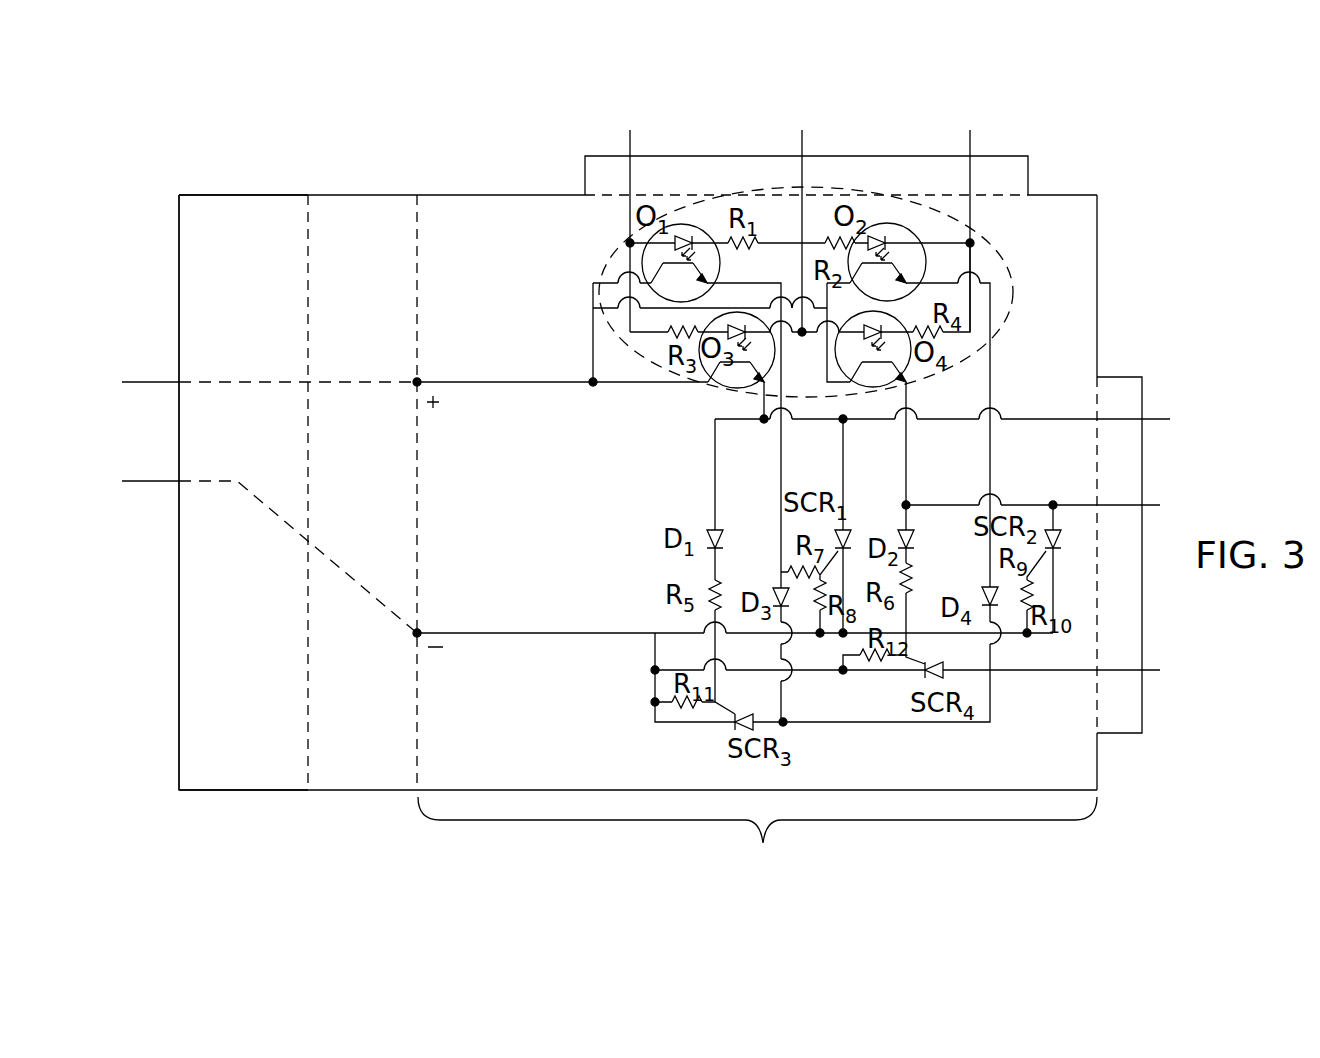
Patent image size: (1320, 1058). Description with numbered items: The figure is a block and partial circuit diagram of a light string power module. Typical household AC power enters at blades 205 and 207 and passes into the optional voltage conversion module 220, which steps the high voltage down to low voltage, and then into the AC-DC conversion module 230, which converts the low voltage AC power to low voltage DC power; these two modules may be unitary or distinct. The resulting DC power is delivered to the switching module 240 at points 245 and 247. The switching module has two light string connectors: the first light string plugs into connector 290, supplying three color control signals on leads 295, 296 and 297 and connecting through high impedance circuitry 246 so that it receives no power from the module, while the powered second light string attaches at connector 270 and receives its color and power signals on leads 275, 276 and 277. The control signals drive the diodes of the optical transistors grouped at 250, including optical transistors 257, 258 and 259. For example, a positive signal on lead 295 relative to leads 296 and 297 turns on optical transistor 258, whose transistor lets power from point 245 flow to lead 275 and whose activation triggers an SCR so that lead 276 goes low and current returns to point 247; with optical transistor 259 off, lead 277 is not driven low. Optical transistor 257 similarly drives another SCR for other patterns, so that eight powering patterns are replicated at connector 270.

The blade 205 is at (130, 382).
The blade 207 is at (150, 481).
The voltage conversion module 220 is at (243, 195).
The AC-DC conversion module 230 is at (363, 195).
The switching module 240 is at (757, 840).
The point 245 is at (417, 382).
The high impedance circuitry 246 is at (970, 242).
The point 247 is at (417, 633).
The optical transistor group 250 is at (690, 207).
The optical transistor 257 is at (923, 278).
The optical transistor 258 is at (707, 384).
The optical transistor 259 is at (908, 380).
The second light string connector 270 is at (1142, 733).
The lead 275 is at (1170, 419).
The lead 276 is at (1160, 670).
The lead 277 is at (1160, 505).
The connector 290 is at (1008, 156).
The color control signal lead 295 is at (630, 148).
The color control signal lead 296 is at (802, 148).
The color control signal lead 297 is at (970, 142).